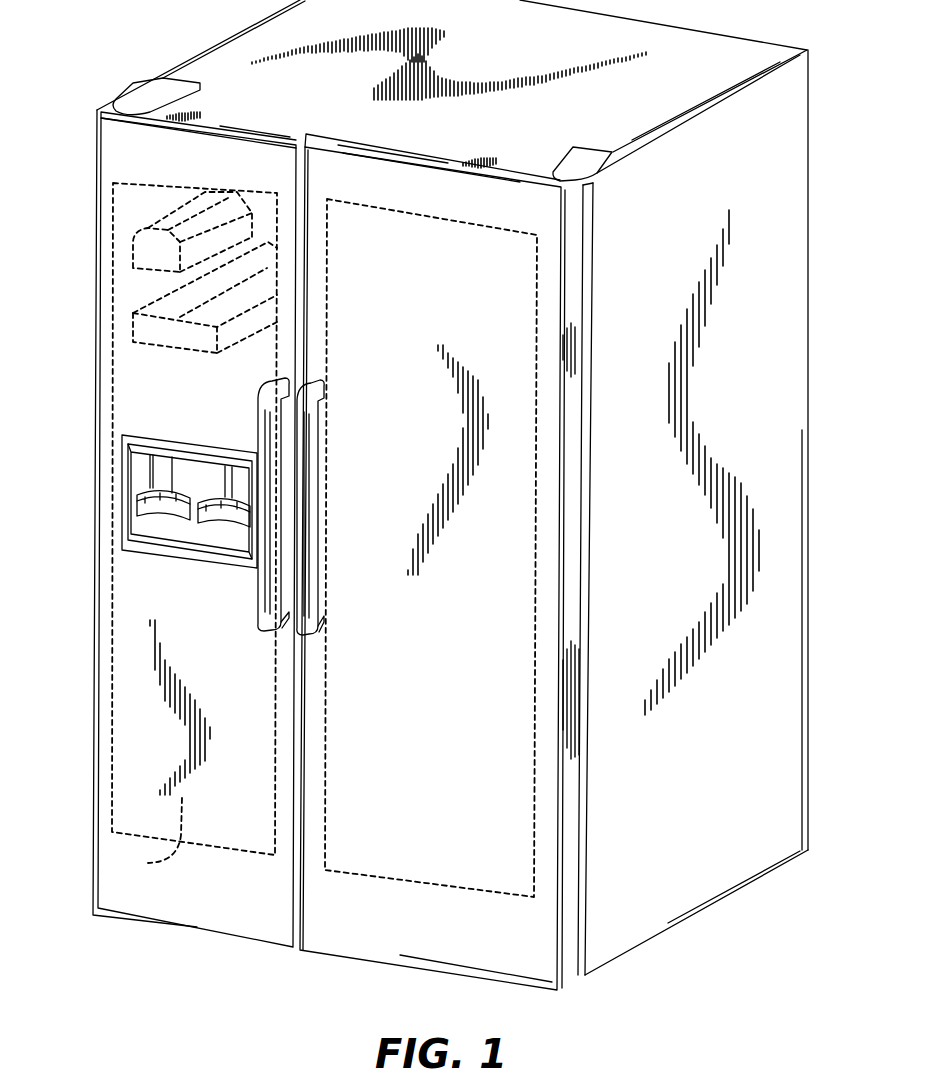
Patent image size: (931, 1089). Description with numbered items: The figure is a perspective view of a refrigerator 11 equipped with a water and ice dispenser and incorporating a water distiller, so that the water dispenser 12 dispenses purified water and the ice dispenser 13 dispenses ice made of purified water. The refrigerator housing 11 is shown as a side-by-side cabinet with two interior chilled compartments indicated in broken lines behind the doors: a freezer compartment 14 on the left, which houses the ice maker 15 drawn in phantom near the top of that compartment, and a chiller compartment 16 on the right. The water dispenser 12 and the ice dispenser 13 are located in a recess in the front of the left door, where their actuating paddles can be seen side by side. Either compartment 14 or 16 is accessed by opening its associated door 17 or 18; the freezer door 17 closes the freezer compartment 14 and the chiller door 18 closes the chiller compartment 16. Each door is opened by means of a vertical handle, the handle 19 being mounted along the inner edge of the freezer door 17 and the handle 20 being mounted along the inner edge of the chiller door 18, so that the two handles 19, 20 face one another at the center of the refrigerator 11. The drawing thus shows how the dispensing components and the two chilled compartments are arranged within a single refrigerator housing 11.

The refrigerator 11 is at (822, 490).
The water dispenser 12 is at (158, 512).
The ice dispenser 13 is at (212, 521).
The freezer compartment 14 is at (149, 837).
The ice maker 15 is at (136, 289).
The chiller compartment 16 is at (408, 842).
The door 17 is at (218, 905).
The door 18 is at (333, 933).
The handle 19 is at (258, 592).
The handle 20 is at (317, 478).